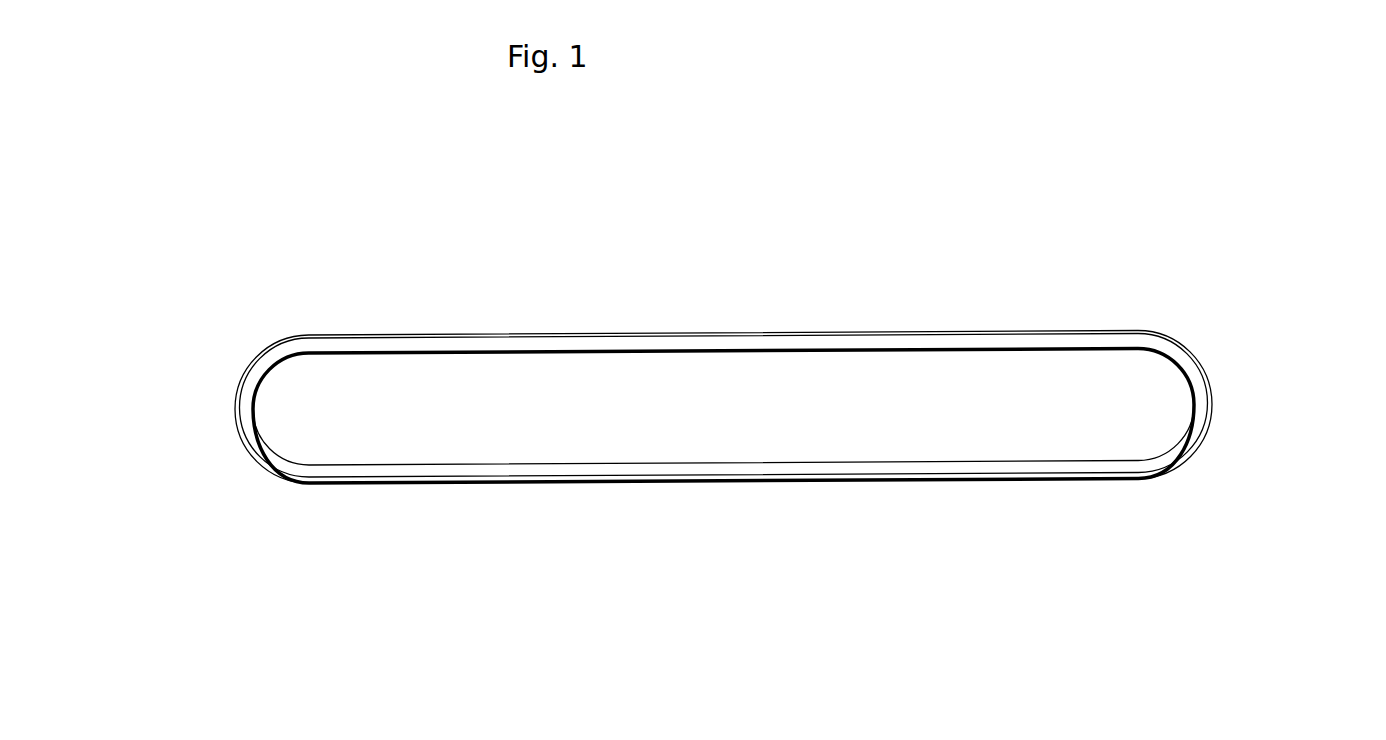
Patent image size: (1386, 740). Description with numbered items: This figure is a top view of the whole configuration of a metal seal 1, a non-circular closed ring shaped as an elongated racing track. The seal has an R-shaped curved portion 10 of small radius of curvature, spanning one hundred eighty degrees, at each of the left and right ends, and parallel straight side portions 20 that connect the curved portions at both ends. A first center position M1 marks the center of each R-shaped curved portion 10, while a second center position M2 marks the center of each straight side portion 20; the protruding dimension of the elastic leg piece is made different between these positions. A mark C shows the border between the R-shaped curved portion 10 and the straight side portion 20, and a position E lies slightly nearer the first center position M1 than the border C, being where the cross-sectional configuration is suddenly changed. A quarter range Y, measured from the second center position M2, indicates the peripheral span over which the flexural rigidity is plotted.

The metal seal 1 is at (893, 510).
The R-shaped curved portion 10 is at (237, 545).
The straight side portion 20 is at (1141, 332).
The first center position M1 is at (238, 422).
The second center position M2 is at (721, 507).
The border C is at (1145, 318).
The position E is at (1157, 373).
The quarter range Y is at (721, 182).